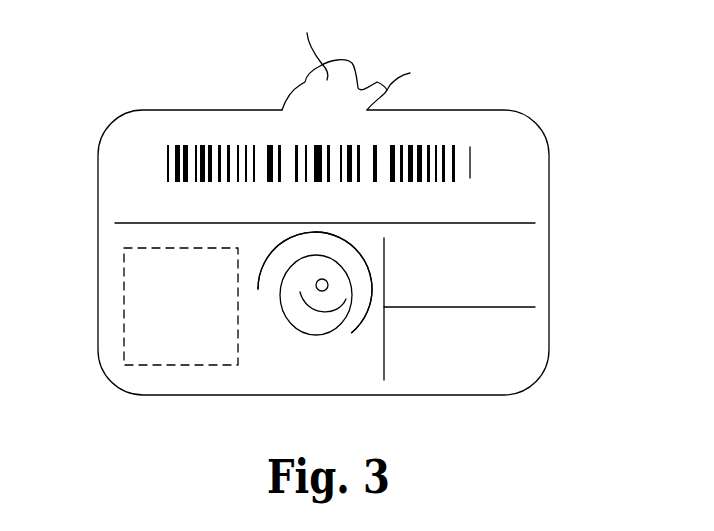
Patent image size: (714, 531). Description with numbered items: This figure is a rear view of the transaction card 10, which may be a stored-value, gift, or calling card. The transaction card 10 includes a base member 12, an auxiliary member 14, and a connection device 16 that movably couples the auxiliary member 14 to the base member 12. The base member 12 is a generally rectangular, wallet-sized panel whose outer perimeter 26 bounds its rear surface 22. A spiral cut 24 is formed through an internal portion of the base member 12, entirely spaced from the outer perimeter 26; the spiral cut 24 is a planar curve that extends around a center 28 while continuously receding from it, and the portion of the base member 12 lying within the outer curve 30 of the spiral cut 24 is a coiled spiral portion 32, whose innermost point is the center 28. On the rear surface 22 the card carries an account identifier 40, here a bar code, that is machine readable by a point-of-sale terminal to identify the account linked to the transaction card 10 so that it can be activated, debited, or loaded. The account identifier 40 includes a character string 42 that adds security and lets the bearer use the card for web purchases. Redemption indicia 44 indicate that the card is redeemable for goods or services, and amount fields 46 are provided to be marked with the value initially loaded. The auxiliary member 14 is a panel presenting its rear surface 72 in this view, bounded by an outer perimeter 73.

The transaction card 10 is at (124, 76).
The base member 12 is at (532, 135).
The auxiliary member 14 is at (346, 78).
The connection device 16 is at (323, 291).
The rear surface 22 is at (543, 302).
The spiral cut 24 is at (258, 289).
The outer perimeter 26 is at (549, 228).
The center 28 is at (333, 303).
The outer curve 30 is at (367, 318).
The spiral portion 32 is at (283, 253).
The account identifier 40 is at (470, 158).
The character string 42 is at (473, 199).
The redemption indicia 44 is at (183, 363).
The amount fields 46 is at (405, 257).
The rear surface 72 is at (315, 45).
The outer perimeter 73 is at (410, 77).